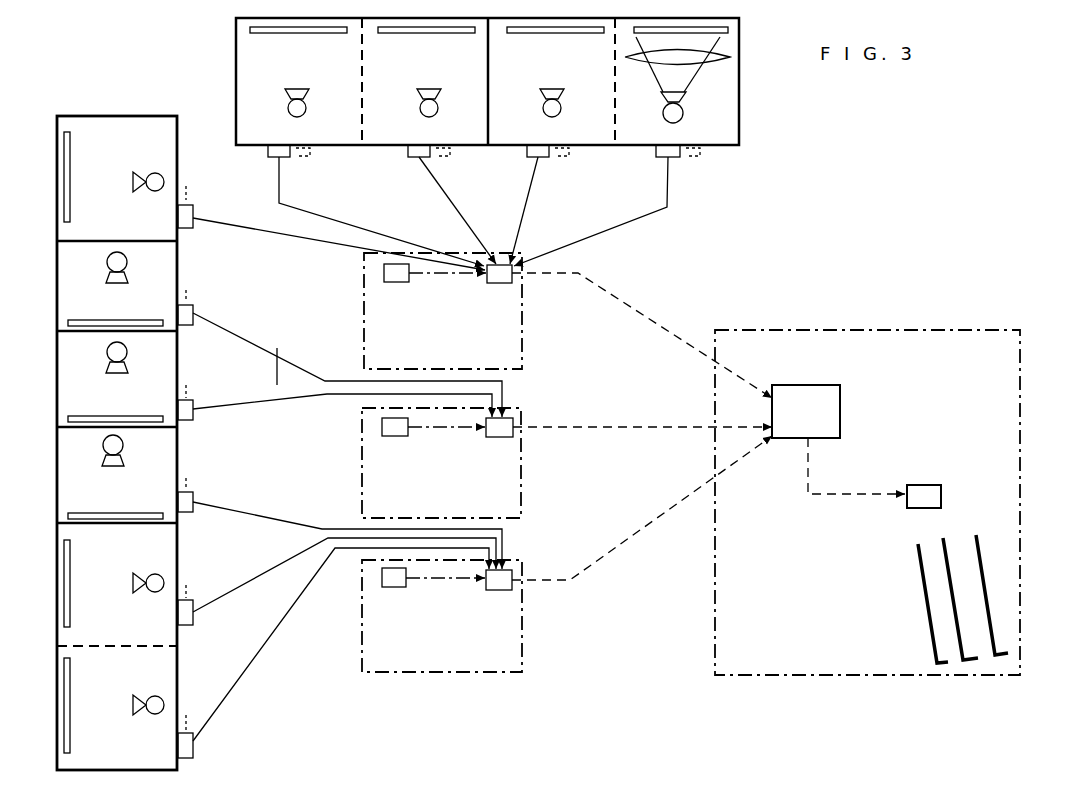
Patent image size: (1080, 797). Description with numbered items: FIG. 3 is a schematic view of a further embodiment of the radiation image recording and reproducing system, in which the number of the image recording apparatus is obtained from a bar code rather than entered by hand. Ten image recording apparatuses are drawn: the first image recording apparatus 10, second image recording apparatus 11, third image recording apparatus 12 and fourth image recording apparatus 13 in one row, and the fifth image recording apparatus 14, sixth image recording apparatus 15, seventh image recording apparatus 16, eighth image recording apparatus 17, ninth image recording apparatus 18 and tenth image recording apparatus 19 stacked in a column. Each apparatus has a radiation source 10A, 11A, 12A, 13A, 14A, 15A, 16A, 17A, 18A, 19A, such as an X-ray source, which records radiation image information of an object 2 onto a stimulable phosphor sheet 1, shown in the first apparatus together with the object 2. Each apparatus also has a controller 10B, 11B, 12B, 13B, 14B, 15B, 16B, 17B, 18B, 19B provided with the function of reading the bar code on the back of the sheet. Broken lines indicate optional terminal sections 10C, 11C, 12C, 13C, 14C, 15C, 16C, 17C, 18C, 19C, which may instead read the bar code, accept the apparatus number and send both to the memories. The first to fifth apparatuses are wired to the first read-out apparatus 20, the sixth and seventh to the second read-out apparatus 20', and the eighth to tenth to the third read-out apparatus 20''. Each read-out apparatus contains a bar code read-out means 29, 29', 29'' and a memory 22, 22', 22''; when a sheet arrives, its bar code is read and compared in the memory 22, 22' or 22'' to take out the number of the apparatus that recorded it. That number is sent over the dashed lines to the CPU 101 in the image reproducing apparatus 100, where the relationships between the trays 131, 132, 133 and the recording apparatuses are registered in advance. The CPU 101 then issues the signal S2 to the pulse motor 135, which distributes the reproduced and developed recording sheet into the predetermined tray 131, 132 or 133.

The stimulable phosphor sheet 1 is at (739, 30).
The object 2 is at (716, 60).
The first image recording apparatus 10 is at (741, 105).
The radiation source 10A is at (683, 116).
The controller 10B is at (676, 158).
The terminal section 10C is at (702, 152).
The second image recording apparatus 11 is at (607, 148).
The radiation source 11A is at (561, 113).
The controller 11B is at (545, 158).
The terminal section 11C is at (571, 150).
The third image recording apparatus 12 is at (480, 148).
The radiation source 12A is at (438, 113).
The controller 12B is at (417, 158).
The terminal section 12C is at (452, 150).
The fourth image recording apparatus 13 is at (353, 148).
The radiation source 13A is at (306, 113).
The controller 13B is at (283, 158).
The terminal section 13C is at (312, 150).
The fifth image recording apparatus 14 is at (165, 157).
The radiation source 14A is at (150, 172).
The controller 14B is at (196, 215).
The terminal section 14C is at (190, 190).
The sixth image recording apparatus 15 is at (175, 260).
The radiation source 15A is at (126, 257).
The controller 15B is at (196, 310).
The terminal section 15C is at (190, 292).
The seventh image recording apparatus 16 is at (175, 370).
The radiation source 16A is at (126, 347).
The controller 16B is at (196, 402).
The terminal section 16C is at (190, 386).
The eighth image recording apparatus 17 is at (175, 455).
The radiation source 17A is at (123, 450).
The controller 17B is at (196, 502).
The terminal section 17C is at (190, 480).
The ninth image recording apparatus 18 is at (175, 560).
The radiation source 18A is at (155, 573).
The controller 18B is at (196, 610).
The terminal section 18C is at (190, 585).
The tenth image recording apparatus 19 is at (170, 668).
The radiation source 19A is at (155, 695).
The controller 19B is at (196, 750).
The terminal section 19C is at (190, 718).
The first read-out apparatus 20 is at (443, 311).
The second read-out apparatus 20' is at (441, 463).
The third read-out apparatus 20'' is at (442, 616).
The memory 22 is at (624, 331).
The memory 22' is at (622, 444).
The memory 22'' is at (624, 527).
The bar code read-out means 29 is at (431, 289).
The bar code read-out means 29' is at (431, 444).
The bar code read-out means 29'' is at (431, 593).
The image reproducing apparatus 100 is at (990, 328).
The CPU 101 is at (829, 383).
The tray 131 is at (915, 548).
The tray 132 is at (948, 540).
The tray 133 is at (985, 545).
The pulse motor 135 is at (935, 483).
The signal S2 is at (856, 466).